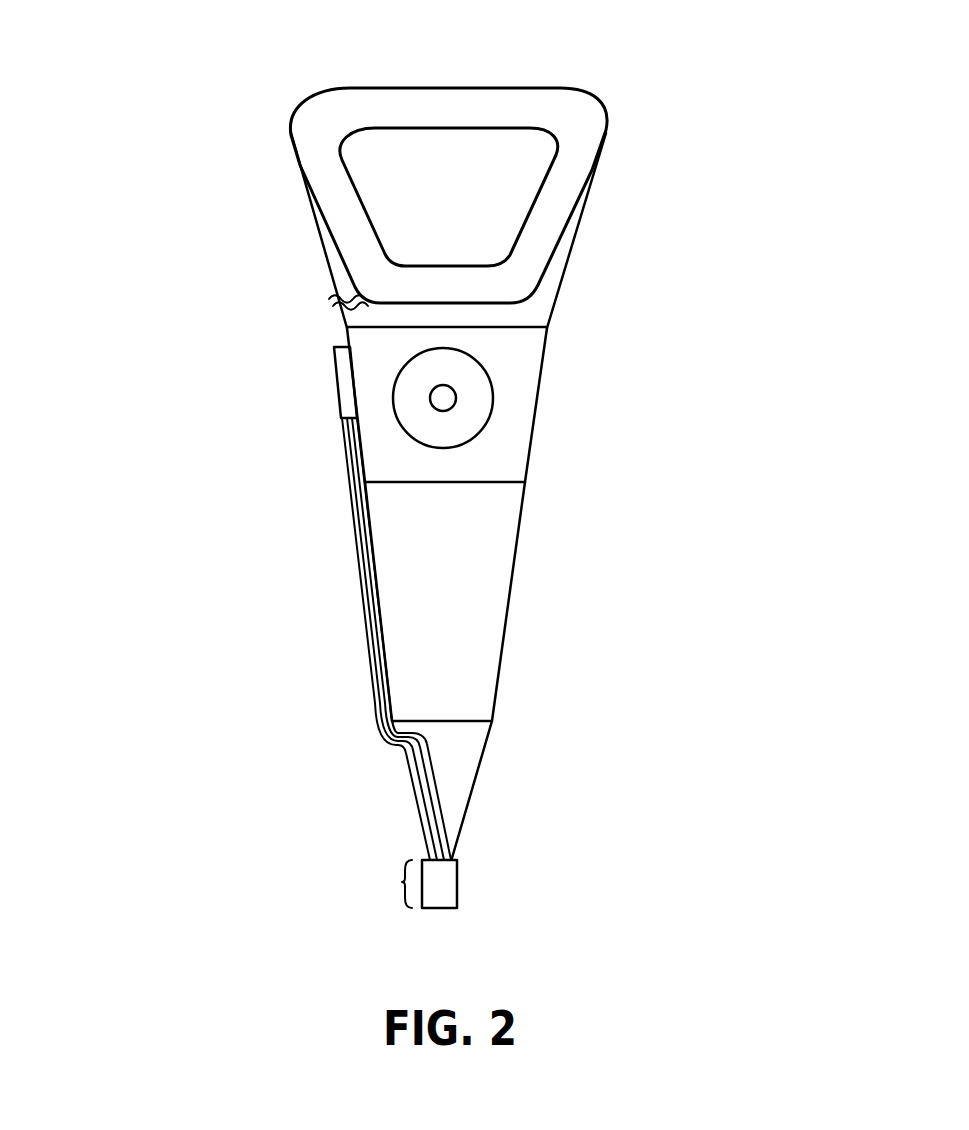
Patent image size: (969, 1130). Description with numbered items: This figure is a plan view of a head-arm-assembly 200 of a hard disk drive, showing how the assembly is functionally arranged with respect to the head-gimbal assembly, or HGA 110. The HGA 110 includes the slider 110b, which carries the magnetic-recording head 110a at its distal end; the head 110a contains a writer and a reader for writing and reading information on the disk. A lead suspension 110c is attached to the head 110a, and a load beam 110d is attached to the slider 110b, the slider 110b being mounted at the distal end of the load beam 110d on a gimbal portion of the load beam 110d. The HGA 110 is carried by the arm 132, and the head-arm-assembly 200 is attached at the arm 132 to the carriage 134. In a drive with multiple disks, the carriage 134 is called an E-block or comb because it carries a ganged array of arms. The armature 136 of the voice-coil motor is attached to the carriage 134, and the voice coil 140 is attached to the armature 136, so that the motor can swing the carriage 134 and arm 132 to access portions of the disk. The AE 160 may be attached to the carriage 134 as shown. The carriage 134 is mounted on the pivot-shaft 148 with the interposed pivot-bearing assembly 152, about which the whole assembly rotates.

The handheld device 200 is at (345, 457).
The voice coil 140 is at (343, 218).
The armature 136 is at (345, 282).
The AE 160 is at (347, 390).
The pivot-shaft 148 is at (443, 397).
The pivot-bearing assembly 152 is at (477, 408).
The carriage 134 is at (491, 400).
The arm 132 is at (440, 560).
The HGA 110 is at (313, 663).
The magnetic-recording head 110a is at (427, 900).
The slider 110b is at (407, 883).
The lead suspension 110c is at (417, 788).
The load beam 110d is at (440, 758).